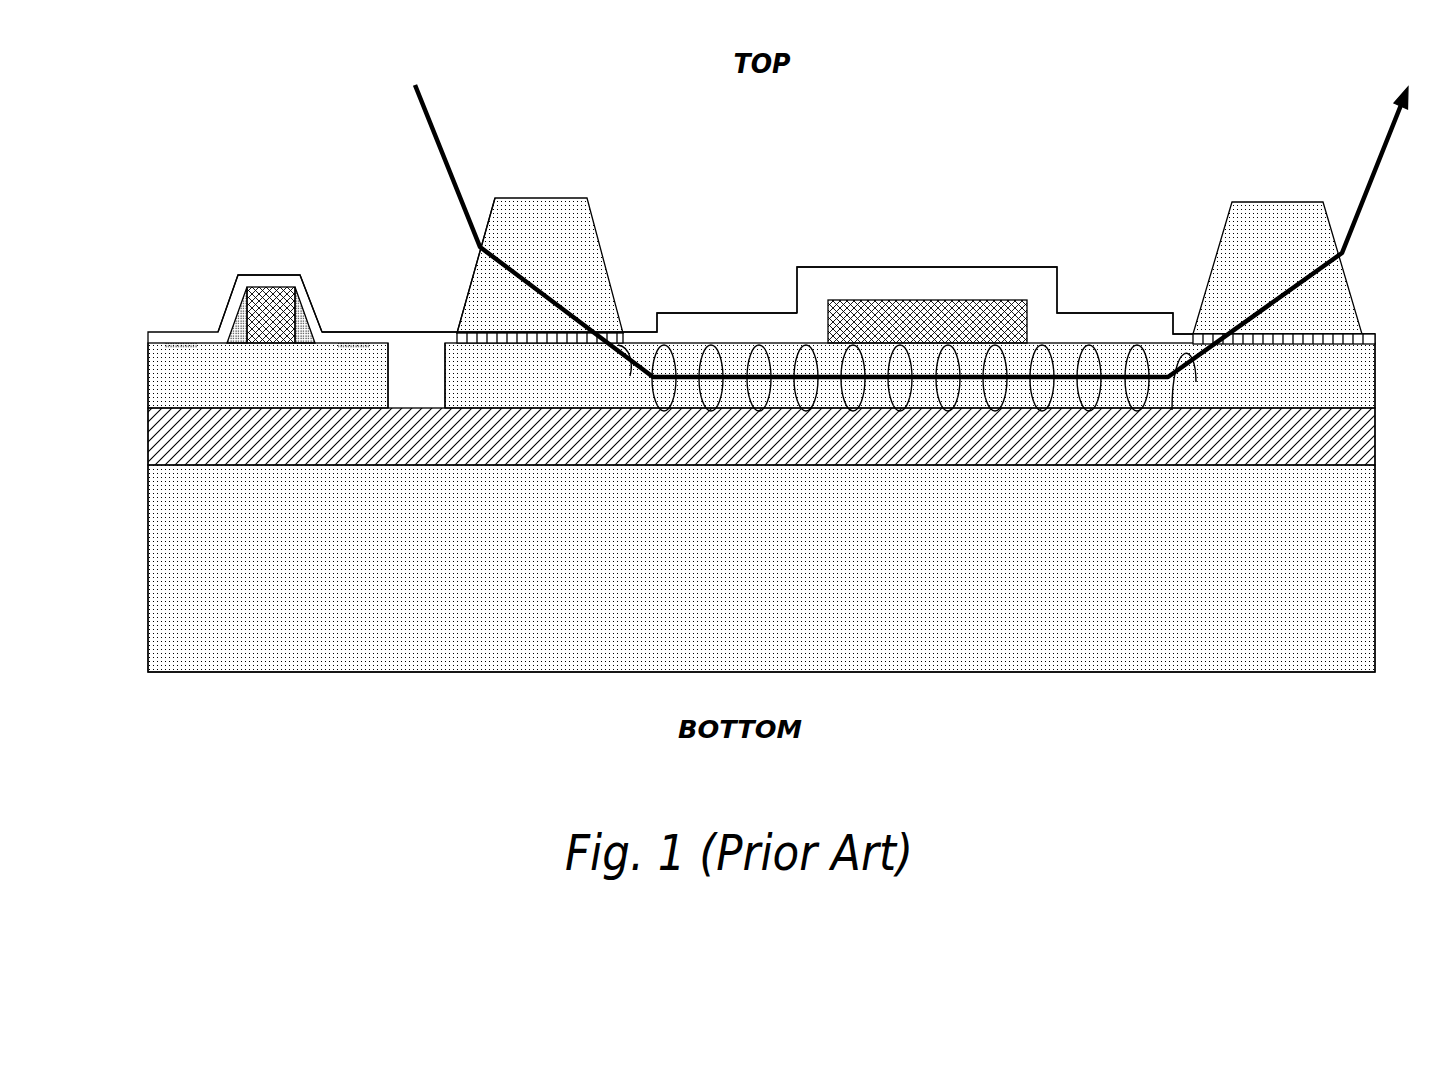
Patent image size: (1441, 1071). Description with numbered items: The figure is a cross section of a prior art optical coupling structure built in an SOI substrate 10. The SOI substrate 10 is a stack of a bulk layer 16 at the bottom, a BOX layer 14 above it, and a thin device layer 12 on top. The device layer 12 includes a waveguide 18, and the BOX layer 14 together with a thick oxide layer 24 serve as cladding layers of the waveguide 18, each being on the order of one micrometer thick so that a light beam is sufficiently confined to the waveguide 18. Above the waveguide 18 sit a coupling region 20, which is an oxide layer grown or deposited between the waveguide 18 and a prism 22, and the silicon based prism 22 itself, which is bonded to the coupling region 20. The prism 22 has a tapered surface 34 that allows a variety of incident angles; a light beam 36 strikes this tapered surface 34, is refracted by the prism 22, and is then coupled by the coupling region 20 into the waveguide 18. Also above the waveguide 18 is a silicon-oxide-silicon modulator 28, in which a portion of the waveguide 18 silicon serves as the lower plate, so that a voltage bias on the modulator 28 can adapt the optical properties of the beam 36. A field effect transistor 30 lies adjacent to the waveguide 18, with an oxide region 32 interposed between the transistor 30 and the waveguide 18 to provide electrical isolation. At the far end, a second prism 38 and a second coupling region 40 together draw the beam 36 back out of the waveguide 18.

The SOI substrate 10 is at (132, 325).
The device layer 12 is at (508, 402).
The BOX layer 14 is at (507, 461).
The bulk layer 16 is at (492, 664).
The waveguide 18 is at (792, 360).
The coupling region 20 is at (645, 332).
The prism 22 is at (587, 198).
The thick oxide layer 24 is at (745, 313).
The silicon-oxide-silicon modulator 28 is at (933, 307).
The field effect transistor 30 is at (162, 262).
The oxide region 32 is at (420, 353).
The tapered surface 34 is at (467, 268).
The light beam 36 is at (911, 238).
The prism 38 is at (1232, 203).
The coupling region 40 is at (1340, 343).